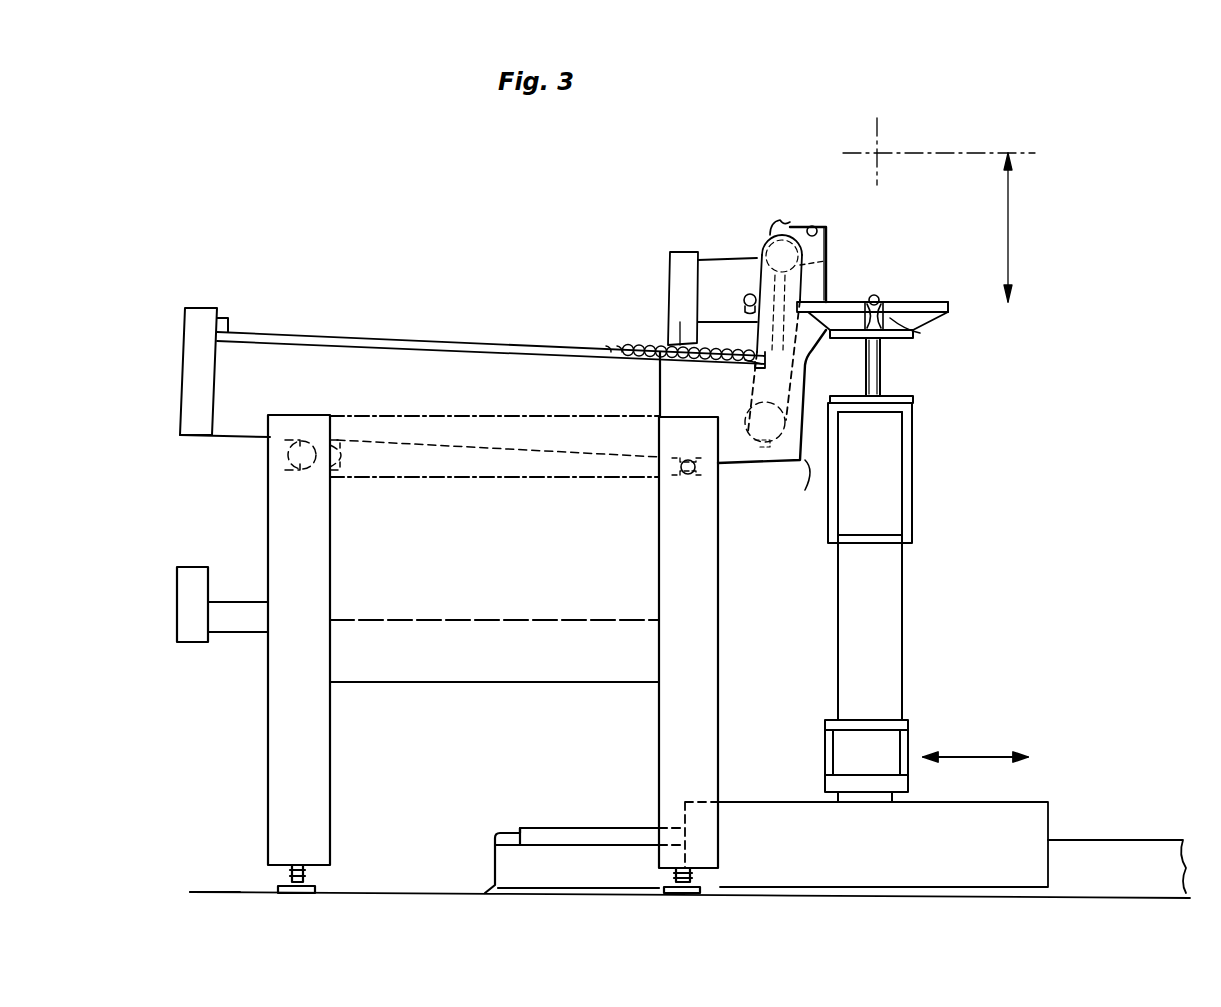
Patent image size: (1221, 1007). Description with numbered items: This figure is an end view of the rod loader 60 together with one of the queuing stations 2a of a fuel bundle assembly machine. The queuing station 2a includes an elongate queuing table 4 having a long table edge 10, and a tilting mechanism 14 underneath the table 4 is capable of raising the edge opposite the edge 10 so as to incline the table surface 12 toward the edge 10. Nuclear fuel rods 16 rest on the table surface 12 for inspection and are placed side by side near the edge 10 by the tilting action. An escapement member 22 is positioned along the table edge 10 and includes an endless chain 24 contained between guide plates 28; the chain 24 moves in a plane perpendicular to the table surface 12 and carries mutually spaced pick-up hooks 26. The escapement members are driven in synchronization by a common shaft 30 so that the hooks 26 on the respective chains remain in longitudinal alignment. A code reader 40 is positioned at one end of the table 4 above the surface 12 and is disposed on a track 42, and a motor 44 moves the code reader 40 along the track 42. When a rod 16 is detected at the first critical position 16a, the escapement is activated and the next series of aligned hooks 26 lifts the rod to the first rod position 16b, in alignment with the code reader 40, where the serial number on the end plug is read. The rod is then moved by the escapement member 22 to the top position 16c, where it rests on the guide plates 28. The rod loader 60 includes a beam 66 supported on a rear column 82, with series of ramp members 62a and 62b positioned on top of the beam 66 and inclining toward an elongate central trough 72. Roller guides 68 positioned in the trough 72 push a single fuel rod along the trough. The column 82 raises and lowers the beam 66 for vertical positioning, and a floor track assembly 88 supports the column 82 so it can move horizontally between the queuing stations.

The queuing station 2a is at (250, 283).
The queuing table 4 is at (185, 355).
The table edge 10 is at (793, 485).
The table surface 12 is at (340, 334).
The tilting mechanism 14 is at (290, 460).
The nuclear fuel rod 16 is at (652, 346).
The first critical rod position 16a is at (752, 366).
The first rod position 16b is at (750, 292).
The top rod position 16c is at (809, 226).
The escapement member 22 is at (826, 220).
The endless chain 24 is at (827, 263).
The pick-up hook 26 is at (775, 226).
The guide plate 28 is at (832, 245).
The common shaft 30 is at (763, 420).
The code reader 40 is at (717, 262).
The track 42 is at (670, 250).
The motor 44 is at (680, 330).
The rod loader 60 is at (985, 329).
The ramp member 62a is at (848, 288).
The ramp member 62b is at (950, 302).
The beam 66 is at (882, 380).
The roller guide 68 is at (918, 331).
The central trough 72 is at (878, 300).
The rear column 82 is at (912, 462).
The floor track assembly 88 is at (1020, 801).